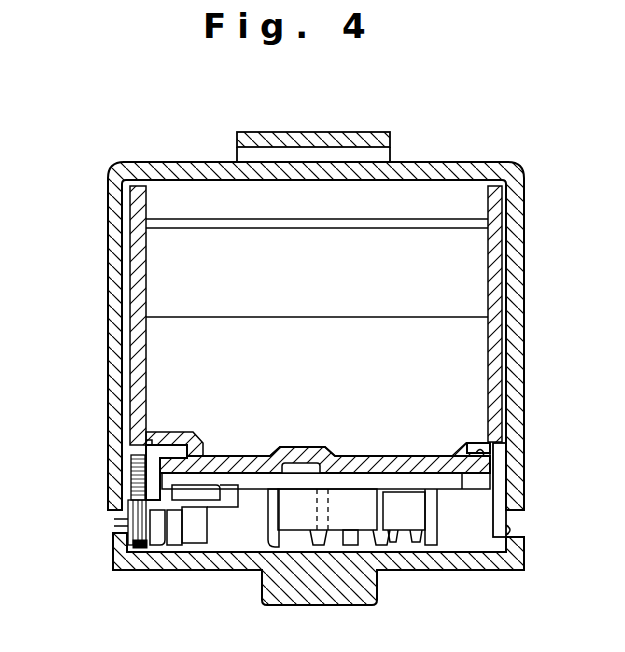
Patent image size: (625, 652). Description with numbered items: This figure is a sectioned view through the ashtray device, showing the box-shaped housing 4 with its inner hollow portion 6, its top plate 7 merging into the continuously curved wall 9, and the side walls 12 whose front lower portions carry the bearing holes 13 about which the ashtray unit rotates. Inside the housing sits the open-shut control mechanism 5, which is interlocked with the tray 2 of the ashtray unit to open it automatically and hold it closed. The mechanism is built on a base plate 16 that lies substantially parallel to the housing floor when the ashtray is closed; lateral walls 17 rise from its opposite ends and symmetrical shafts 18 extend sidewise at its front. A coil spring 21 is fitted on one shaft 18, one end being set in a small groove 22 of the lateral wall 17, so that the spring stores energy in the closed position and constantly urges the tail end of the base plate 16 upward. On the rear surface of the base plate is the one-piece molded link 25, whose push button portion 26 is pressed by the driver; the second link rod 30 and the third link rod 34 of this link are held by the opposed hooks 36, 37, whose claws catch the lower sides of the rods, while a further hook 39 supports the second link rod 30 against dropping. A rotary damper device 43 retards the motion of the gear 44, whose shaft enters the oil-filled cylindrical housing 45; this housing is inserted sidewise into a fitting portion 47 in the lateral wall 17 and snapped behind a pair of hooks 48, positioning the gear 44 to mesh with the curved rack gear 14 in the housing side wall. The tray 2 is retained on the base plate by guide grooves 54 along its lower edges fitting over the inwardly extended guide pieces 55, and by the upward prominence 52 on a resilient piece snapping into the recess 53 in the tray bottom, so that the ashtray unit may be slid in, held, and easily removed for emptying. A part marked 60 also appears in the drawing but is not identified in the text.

The tray 2 is at (488, 330).
The housing 4 is at (452, 158).
The open-shut control mechanism 5 is at (462, 520).
The inner hollow portion 6 is at (450, 208).
The top plate 7 is at (196, 170).
The curved wall 9 is at (200, 109).
The side walls 12 is at (108, 265).
The bearing holes 13 is at (116, 532).
The curved rack gear 14 is at (140, 448).
The base plate 16 is at (386, 470).
The lateral walls 17 is at (499, 492).
The shafts 18 is at (120, 524).
The coil spring 21 is at (136, 545).
The small groove 22 is at (132, 497).
The link 25 is at (350, 549).
The push button portion 26 is at (405, 505).
The second link rod 30 is at (346, 500).
The third link rod 34 is at (305, 510).
The hook 36 is at (425, 545).
The hook 37 is at (288, 545).
The hook 39 is at (386, 545).
The rotary damper device 43 is at (207, 546).
The gear 44 is at (140, 472).
The cylindrical housing 45 is at (207, 517).
The fitting portion 47 is at (208, 492).
The hooks 48 is at (180, 512).
The prominence 52 is at (300, 462).
The recess 53 is at (280, 446).
The guide grooves 54 is at (165, 447).
The guide pieces 55 is at (150, 440).
The cap 60 is at (330, 136).